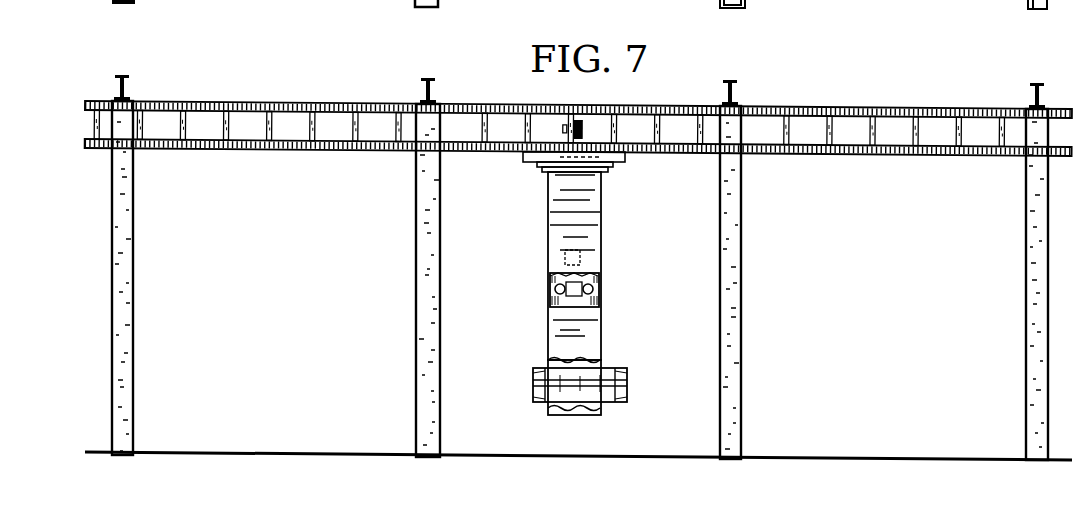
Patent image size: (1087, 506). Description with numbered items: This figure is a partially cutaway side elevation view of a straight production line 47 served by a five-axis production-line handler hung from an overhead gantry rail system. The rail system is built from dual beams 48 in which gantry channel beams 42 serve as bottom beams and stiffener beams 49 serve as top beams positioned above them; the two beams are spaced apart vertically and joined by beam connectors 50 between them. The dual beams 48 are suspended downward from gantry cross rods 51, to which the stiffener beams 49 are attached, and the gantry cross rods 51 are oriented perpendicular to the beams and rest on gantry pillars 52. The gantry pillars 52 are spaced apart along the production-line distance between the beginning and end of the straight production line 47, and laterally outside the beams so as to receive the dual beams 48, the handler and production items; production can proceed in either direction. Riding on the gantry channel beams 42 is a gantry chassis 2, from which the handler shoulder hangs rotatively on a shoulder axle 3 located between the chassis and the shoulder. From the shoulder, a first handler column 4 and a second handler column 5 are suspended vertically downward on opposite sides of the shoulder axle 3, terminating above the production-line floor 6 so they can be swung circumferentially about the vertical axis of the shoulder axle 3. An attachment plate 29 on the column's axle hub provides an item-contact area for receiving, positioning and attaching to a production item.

The straight production line 47 is at (90, 39).
The dual beams 48 is at (271, 88).
The stiffener beams 49 is at (193, 101).
The gantry channel beams 42 is at (195, 149).
The beam connectors 50 is at (229, 130).
The gantry cross rods 51 is at (425, 78).
The gantry pillars 52 is at (428, 296).
The production-line floor 6 is at (528, 455).
The gantry chassis 2 is at (618, 158).
The shoulder axle 3 is at (602, 173).
The first handler column 4 is at (580, 246).
The second handler column 5 is at (598, 360).
The attachment plate 29 is at (630, 383).